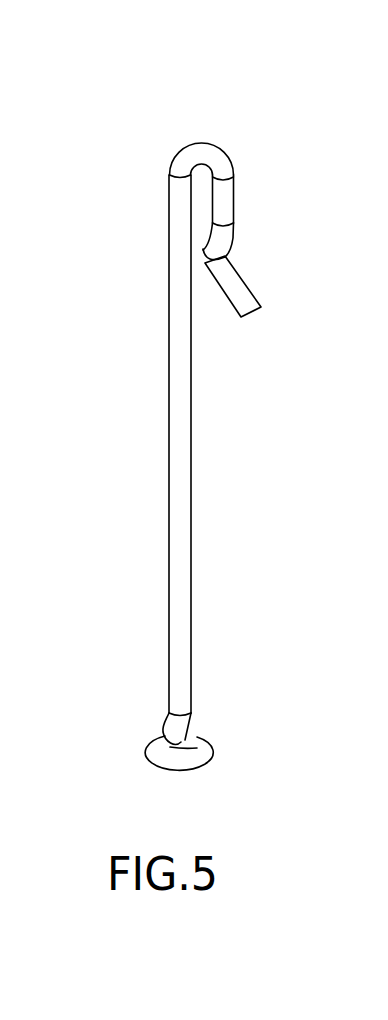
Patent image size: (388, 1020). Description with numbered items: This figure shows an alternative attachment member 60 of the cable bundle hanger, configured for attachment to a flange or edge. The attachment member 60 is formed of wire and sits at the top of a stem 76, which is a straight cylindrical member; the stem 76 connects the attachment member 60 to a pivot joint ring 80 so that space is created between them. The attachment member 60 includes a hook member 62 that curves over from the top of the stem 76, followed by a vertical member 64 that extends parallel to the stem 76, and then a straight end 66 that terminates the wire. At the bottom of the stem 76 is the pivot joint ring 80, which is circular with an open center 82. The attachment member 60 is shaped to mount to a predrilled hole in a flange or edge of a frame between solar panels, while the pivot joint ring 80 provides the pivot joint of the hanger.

The attachment member 60 is at (244, 384).
The hook member 62 is at (202, 157).
The vertical member 64 is at (222, 205).
The straight end 66 is at (240, 295).
The stem 76 is at (182, 536).
The pivot joint ring 80 is at (202, 749).
The open center 82 is at (183, 742).